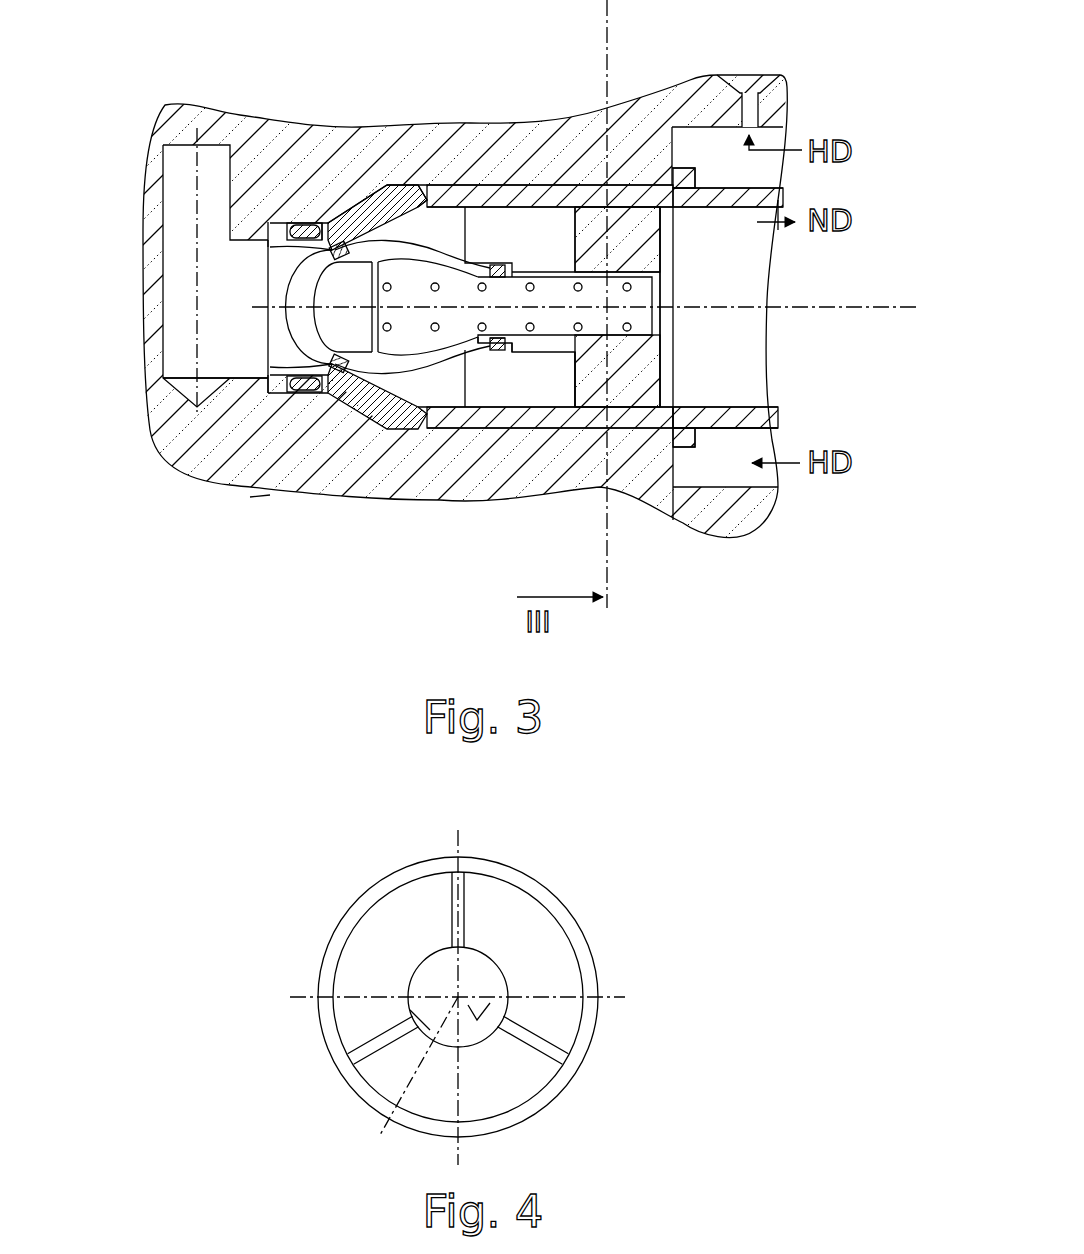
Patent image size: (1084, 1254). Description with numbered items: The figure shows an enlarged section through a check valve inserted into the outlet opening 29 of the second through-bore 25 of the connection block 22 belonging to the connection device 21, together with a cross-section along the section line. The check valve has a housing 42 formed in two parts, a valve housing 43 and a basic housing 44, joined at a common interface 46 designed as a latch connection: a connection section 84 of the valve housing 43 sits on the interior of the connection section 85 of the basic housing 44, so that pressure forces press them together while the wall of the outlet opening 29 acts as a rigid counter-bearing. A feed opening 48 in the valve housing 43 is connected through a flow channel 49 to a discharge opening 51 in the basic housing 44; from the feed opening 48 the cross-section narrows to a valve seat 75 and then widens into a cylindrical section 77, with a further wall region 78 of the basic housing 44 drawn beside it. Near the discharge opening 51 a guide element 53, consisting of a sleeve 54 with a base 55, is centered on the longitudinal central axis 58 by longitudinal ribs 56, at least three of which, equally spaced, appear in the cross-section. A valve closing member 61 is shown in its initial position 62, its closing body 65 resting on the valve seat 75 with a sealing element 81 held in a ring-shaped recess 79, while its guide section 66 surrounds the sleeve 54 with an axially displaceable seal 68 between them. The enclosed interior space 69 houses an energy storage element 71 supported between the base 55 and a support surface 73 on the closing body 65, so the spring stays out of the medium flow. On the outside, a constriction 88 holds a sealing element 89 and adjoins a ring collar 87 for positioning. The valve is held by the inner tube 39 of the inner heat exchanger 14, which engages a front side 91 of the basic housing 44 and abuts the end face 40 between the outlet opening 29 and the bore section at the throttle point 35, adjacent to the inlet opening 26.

In FIG. 3, the inner heat exchanger 14 is at (803, 203).
In FIG. 3, the connection device 21 is at (256, 528).
In FIG. 3, the connection block 22 is at (186, 445).
In FIG. 3, the second through-bore 25 is at (180, 163).
In FIG. 3, the inlet opening 26 is at (698, 143).
In FIG. 3, the outlet opening 29 is at (150, 410).
In FIG. 3, the throttle point 35 is at (750, 107).
In FIG. 3, the inner tube 39 is at (752, 407).
In FIG. 3, the end face 40 is at (678, 470).
In FIG. 3, the housing 42 is at (513, 407).
In FIG. 3, the valve housing 43 is at (350, 198).
In FIG. 3, the basic housing 44 is at (488, 165).
In FIG. 3, the interface 46 is at (426, 168).
In FIG. 3, the feed opening 48 is at (277, 241).
In FIG. 3, the flow channel 49 is at (548, 253).
In FIG. 4, the flow channel 49 is at (527, 943).
In FIG. 3, the discharge opening 51 is at (675, 380).
In FIG. 3, the guide element 53 is at (557, 352).
In FIG. 4, the guide element 53 is at (514, 968).
In FIG. 3, the sleeve 54 is at (673, 240).
In FIG. 3, the base 55 is at (655, 297).
In FIG. 4, the base 55 is at (525, 1018).
In FIG. 3, the longitudinal ribs 56 is at (630, 207).
In FIG. 4, the longitudinal ribs 56 is at (447, 897).
In FIG. 3, the longitudinal central axis 58 is at (915, 310).
In FIG. 4, the longitudinal central axis 58 is at (408, 1082).
In FIG. 3, the valve closing member 61 is at (402, 372).
In FIG. 3, the initial position 62 is at (296, 332).
In FIG. 3, the closing body 65 is at (313, 404).
In FIG. 3, the guide section 66 is at (470, 352).
In FIG. 3, the axially displaceable seal 68 is at (520, 356).
In FIG. 3, the interior space 69 is at (430, 316).
In FIG. 3, the energy storage element 71 is at (583, 327).
In FIG. 3, the support surface 73 is at (346, 380).
In FIG. 3, the valve seat 75 is at (282, 310).
In FIG. 3, the cylindrical section 77 is at (541, 165).
In FIG. 4, the cylindrical section 77 is at (508, 858).
In FIG. 3, the wall 78 is at (518, 197).
In FIG. 3, the ring-shaped recess 79 is at (392, 395).
In FIG. 3, the sealing element 81 is at (335, 222).
In FIG. 3, the connection section 84 is at (410, 184).
In FIG. 3, the connection section 85 is at (440, 198).
In FIG. 3, the ring collar 87 is at (282, 222).
In FIG. 3, the constriction 88 is at (335, 380).
In FIG. 3, the sealing element 89 is at (302, 222).
In FIG. 3, the front side 91 is at (748, 432).
In FIG. 4, the front side 91 is at (547, 887).